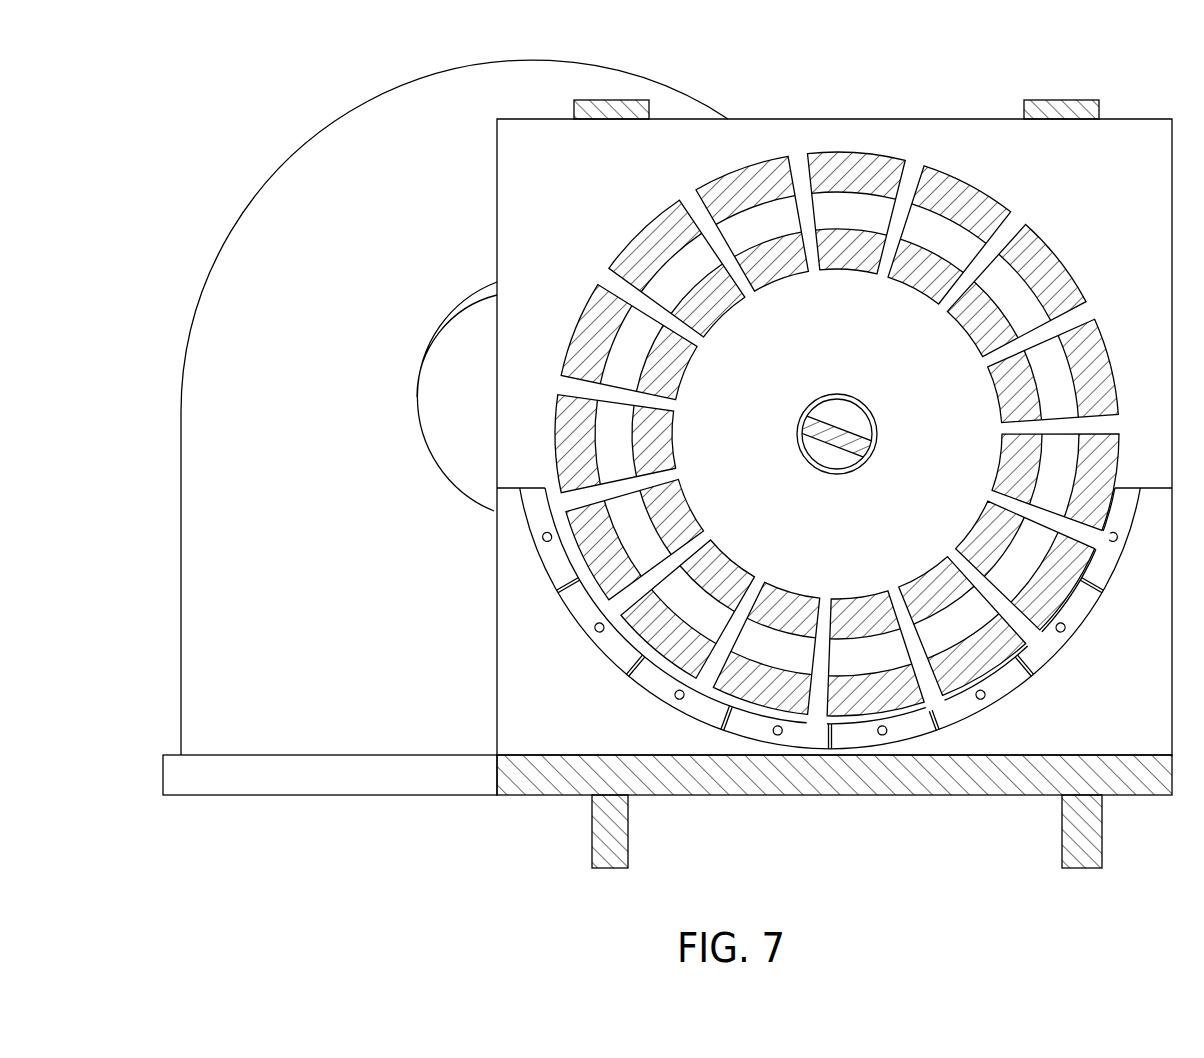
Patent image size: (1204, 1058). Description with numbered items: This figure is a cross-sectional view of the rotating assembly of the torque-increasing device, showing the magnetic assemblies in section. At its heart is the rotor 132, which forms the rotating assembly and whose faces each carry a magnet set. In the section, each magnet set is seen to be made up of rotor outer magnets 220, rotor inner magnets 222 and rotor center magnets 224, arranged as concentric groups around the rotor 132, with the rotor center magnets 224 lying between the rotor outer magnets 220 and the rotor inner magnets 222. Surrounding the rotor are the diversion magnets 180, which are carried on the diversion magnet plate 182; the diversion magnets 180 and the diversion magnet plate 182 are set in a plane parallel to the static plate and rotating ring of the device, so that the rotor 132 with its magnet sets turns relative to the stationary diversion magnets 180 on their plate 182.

The rotor 132 is at (823, 298).
The diversion magnets 180 is at (580, 709).
The diversion magnet plate 182 is at (657, 680).
The rotor outer magnets 220 is at (988, 217).
The rotor inner magnets 222 is at (917, 267).
The rotor center magnets 224 is at (925, 227).